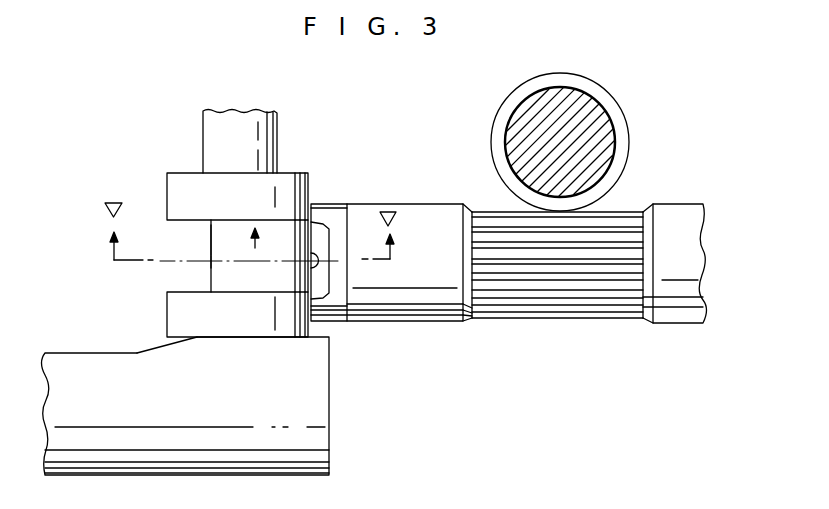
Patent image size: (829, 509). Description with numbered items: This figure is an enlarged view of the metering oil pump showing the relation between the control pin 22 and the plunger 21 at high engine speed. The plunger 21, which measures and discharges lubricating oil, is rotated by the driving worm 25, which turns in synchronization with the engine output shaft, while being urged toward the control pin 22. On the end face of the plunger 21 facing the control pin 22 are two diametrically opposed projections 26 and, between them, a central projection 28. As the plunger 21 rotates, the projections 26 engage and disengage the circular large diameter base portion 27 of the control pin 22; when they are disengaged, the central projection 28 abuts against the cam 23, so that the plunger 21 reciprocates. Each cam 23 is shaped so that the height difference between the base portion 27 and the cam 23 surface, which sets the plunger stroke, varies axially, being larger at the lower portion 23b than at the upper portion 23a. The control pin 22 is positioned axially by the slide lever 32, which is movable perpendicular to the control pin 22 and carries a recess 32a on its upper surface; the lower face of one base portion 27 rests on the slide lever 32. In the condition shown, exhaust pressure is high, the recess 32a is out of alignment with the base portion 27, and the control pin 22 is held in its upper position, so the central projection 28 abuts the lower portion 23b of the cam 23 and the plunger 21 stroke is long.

The plunger 21 is at (679, 198).
The control pin 22 is at (294, 130).
The cam 23 is at (215, 236).
The upper portion of cam 23a is at (211, 250).
The lower portion of cam 23b is at (211, 262).
The driving worm 25 is at (492, 145).
The projection 26 is at (320, 213).
The large diameter base portion 27 is at (190, 173).
The central projection 28 is at (315, 250).
The slide lever 32 is at (316, 402).
The recess 32a is at (105, 353).